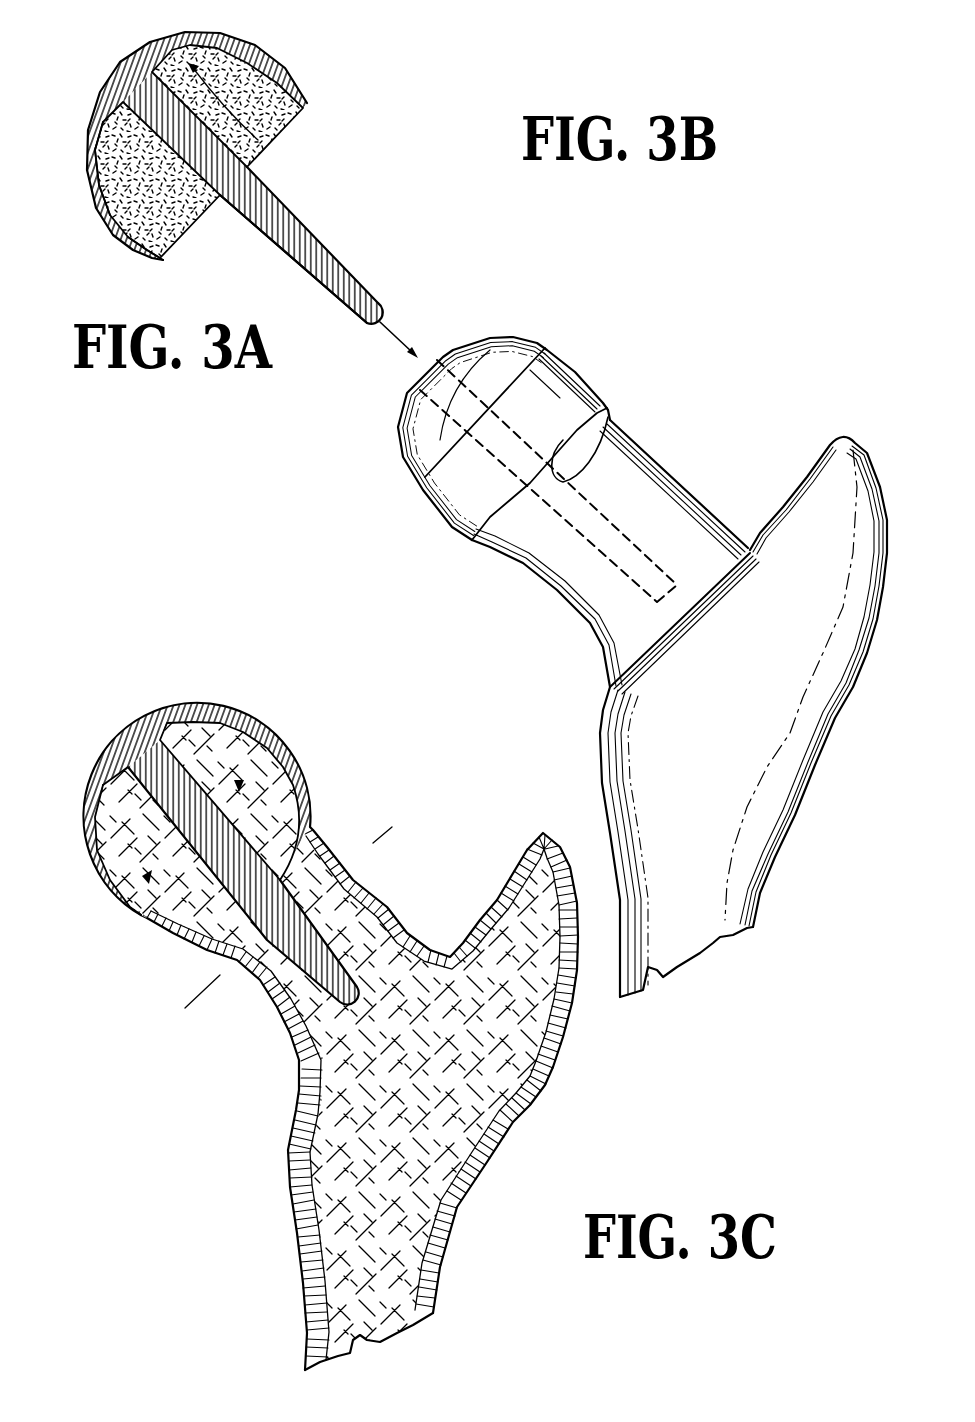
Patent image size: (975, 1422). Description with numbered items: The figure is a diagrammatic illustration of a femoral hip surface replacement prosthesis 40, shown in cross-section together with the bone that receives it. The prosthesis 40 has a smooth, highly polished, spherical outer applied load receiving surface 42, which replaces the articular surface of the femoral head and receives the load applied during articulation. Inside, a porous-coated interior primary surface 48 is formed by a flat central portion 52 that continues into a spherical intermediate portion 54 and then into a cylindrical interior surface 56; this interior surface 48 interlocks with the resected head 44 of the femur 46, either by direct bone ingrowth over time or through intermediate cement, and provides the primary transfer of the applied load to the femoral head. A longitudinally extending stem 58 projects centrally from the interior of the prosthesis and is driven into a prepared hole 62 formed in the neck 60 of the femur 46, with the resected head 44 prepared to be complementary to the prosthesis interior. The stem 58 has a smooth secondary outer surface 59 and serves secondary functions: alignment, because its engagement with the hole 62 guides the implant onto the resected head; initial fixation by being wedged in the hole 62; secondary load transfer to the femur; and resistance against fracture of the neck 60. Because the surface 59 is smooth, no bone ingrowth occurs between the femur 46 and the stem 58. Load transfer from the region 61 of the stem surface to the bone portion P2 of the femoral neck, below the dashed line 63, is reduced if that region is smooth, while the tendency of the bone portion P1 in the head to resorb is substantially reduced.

In FIG. 3A, the hip surface replacement prosthesis 40 is at (219, 168).
In FIG. 3C, the hip surface replacement prosthesis 40 is at (205, 848).
In FIG. 3A, the outer applied load receiving surface 42 is at (156, 40).
In FIG. 3C, the outer applied load receiving surface 42 is at (150, 712).
In FIG. 3B, the resected head of the femur 44 is at (537, 484).
In FIG. 3B, the femur 46 is at (598, 782).
In FIG. 3C, the femur 46 is at (337, 1046).
In FIG. 3A, the porous-coated interior primary surface 48 is at (273, 143).
In FIG. 3C, the porous-coated interior primary surface 48 is at (123, 795).
In FIG. 3A, the flat central portion 52 is at (103, 122).
In FIG. 3A, the spherical intermediate portion 54 is at (107, 192).
In FIG. 3A, the cylindrical interior surface 56 is at (156, 255).
In FIG. 3A, the stem 58 is at (302, 258).
In FIG. 3C, the stem 58 is at (318, 825).
In FIG. 3A, the smooth secondary outer surface 59 is at (320, 250).
In FIG. 3C, the smooth secondary outer surface 59 is at (263, 1008).
In FIG. 3B, the neck of the femur 60 is at (688, 498).
In FIG. 3C, the neck of the femur 60 is at (415, 935).
In FIG. 3C, the region 61 is at (297, 1063).
In FIG. 3B, the prepared hole 62 is at (605, 428).
In FIG. 3C, the dashed line 63 is at (393, 835).
In FIG. 3C, the bone portion P1- P1 is at (238, 785).
In FIG. 3C, the bone portion P2- P2 is at (360, 920).